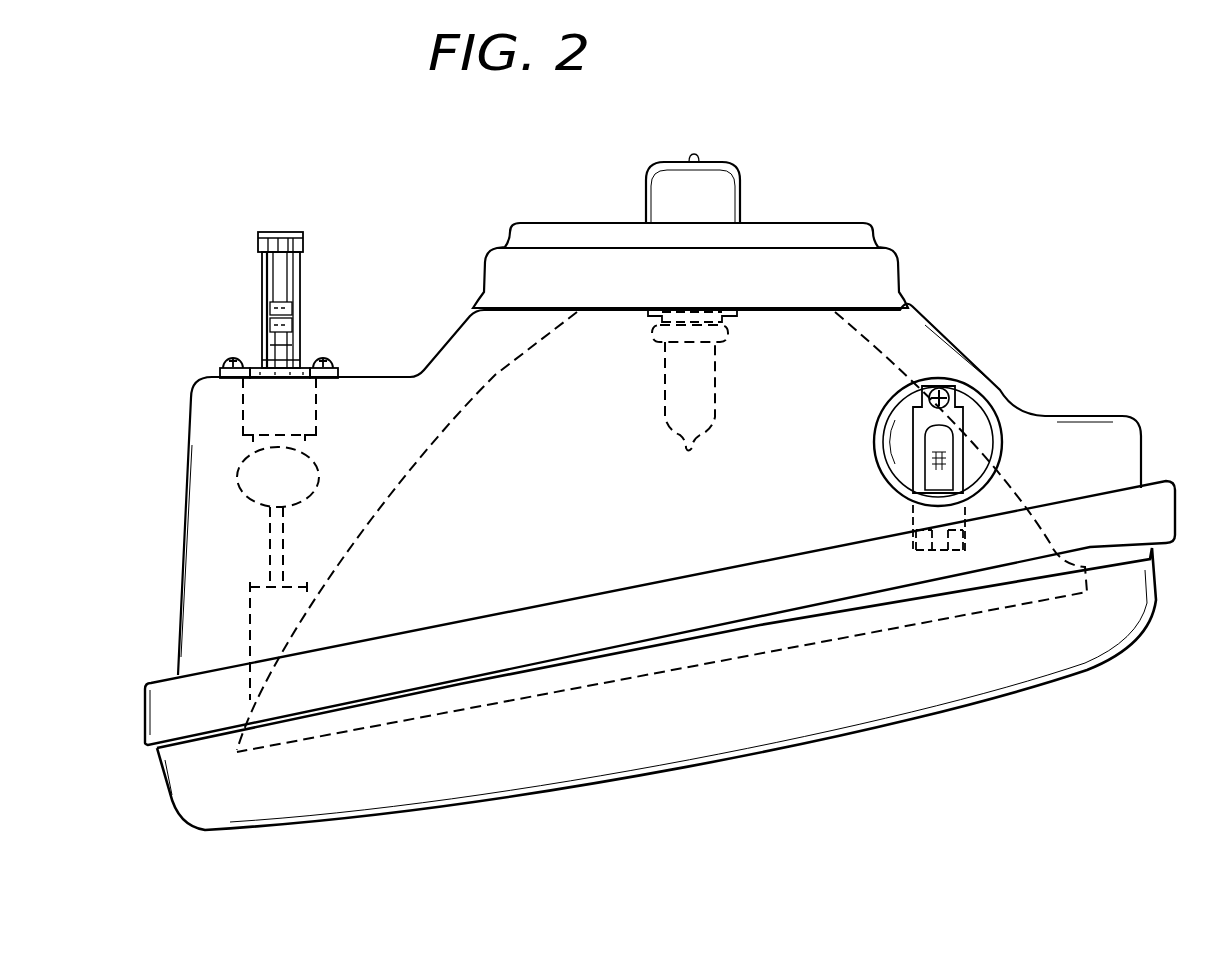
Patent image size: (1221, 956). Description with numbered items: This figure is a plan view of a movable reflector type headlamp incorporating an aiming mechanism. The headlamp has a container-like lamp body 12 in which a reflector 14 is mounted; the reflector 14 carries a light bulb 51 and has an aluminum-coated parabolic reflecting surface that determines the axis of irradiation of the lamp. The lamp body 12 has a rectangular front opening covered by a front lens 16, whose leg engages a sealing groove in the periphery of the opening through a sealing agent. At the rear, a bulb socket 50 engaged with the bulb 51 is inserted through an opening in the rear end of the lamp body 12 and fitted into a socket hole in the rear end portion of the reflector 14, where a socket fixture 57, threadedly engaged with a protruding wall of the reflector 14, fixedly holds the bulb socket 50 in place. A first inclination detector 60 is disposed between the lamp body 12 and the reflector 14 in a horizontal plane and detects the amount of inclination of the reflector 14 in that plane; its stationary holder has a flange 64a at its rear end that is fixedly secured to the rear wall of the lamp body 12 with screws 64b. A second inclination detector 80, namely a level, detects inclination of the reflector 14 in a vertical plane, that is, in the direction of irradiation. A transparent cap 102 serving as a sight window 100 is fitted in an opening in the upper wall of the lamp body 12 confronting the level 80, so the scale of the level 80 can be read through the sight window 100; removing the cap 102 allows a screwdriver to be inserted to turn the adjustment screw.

The lamp body 12 is at (930, 330).
The reflector 14 is at (495, 375).
The front lens 16 is at (738, 762).
The bulb socket 50 is at (712, 172).
The bulb 51 is at (717, 393).
The socket fixture 57 is at (885, 250).
The first inclination detector 60 is at (248, 330).
The flange 64a is at (217, 375).
The screws 64b is at (225, 355).
The second inclination detector 80 is at (975, 418).
The sight window 100 is at (975, 461).
The transparent cap 102 is at (976, 445).